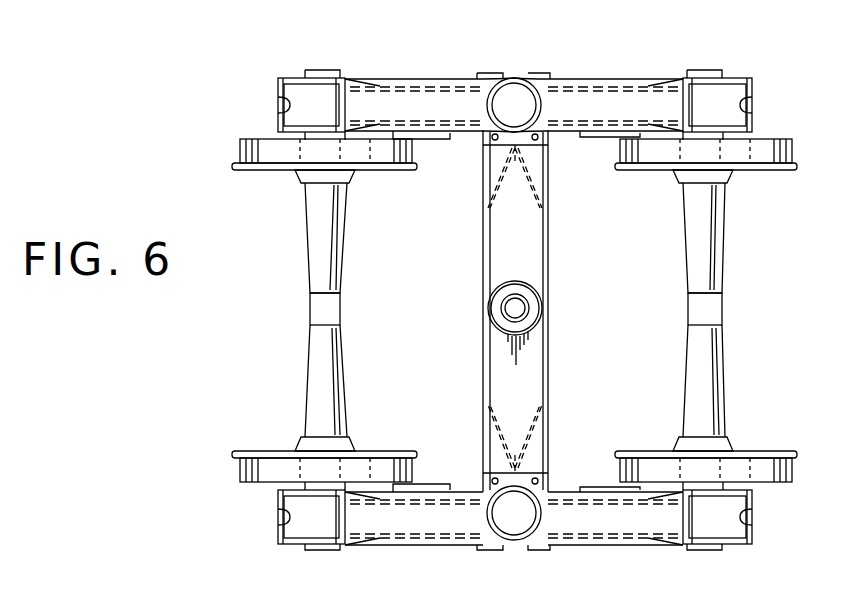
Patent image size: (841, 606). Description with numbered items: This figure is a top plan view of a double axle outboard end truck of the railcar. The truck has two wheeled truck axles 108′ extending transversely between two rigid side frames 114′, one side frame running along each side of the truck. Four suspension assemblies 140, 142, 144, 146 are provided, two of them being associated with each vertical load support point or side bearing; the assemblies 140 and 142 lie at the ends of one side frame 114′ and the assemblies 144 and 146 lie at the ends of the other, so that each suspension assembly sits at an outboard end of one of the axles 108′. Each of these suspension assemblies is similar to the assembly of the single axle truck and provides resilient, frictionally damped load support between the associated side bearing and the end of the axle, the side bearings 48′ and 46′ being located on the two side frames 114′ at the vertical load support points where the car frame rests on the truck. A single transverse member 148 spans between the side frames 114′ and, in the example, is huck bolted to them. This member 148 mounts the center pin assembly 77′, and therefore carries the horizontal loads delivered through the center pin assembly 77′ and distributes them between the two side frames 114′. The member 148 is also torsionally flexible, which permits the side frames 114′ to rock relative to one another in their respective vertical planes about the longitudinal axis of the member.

The suspension assembly 140 is at (336, 62).
The suspension assembly 142 is at (660, 60).
The suspension assembly 144 is at (360, 556).
The suspension assembly 146 is at (672, 555).
The side frame 114′ is at (428, 97).
The side bearing 48′ is at (514, 97).
The side bearing 46′ is at (520, 523).
The wheeled truck axle 108′ is at (305, 268).
The center pin assembly 77′ is at (538, 293).
The transverse member 148 is at (530, 407).